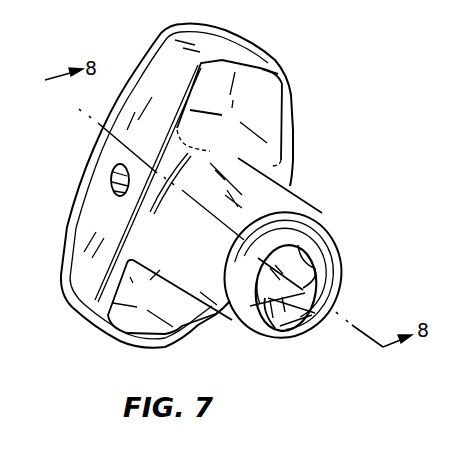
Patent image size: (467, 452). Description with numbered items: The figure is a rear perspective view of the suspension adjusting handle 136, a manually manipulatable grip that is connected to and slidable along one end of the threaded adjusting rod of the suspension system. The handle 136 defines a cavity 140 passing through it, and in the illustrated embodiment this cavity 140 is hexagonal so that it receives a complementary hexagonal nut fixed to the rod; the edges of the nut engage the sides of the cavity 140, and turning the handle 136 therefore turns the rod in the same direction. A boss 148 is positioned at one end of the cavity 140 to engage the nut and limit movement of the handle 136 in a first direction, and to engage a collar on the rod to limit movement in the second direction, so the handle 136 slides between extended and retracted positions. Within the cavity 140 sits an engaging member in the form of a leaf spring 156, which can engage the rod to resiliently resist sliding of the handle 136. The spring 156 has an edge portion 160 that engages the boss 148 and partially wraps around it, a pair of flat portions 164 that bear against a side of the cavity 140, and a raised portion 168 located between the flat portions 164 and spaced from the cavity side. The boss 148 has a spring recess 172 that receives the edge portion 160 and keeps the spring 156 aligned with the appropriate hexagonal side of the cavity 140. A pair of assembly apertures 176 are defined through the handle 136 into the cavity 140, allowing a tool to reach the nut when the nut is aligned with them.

The handle 136 is at (349, 87).
The assembly apertures 176 is at (110, 172).
The raised portion 168 is at (258, 256).
The edge portion 160 is at (316, 316).
The cavity 140 is at (295, 258).
The boss 148 is at (315, 285).
The leaf spring 156 is at (291, 331).
The spring recess 172 is at (278, 330).
The flat portions 164 is at (258, 292).